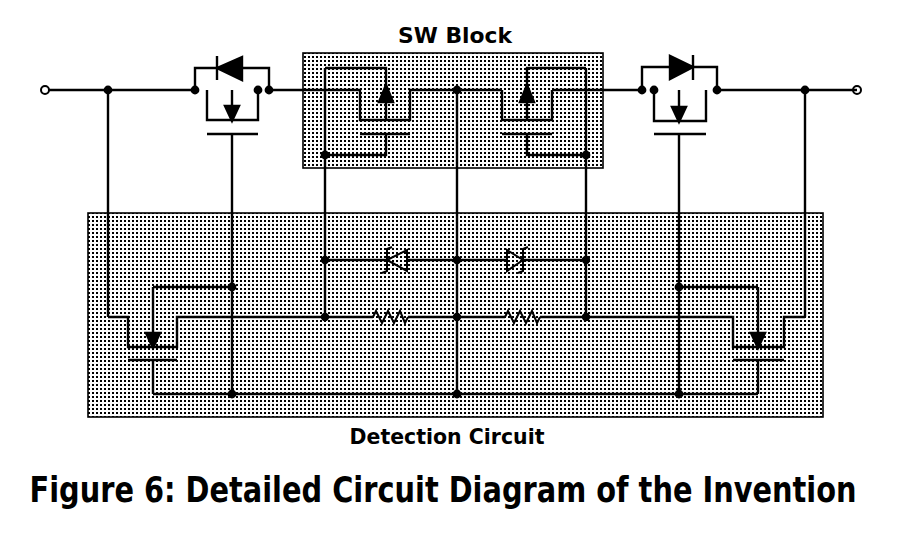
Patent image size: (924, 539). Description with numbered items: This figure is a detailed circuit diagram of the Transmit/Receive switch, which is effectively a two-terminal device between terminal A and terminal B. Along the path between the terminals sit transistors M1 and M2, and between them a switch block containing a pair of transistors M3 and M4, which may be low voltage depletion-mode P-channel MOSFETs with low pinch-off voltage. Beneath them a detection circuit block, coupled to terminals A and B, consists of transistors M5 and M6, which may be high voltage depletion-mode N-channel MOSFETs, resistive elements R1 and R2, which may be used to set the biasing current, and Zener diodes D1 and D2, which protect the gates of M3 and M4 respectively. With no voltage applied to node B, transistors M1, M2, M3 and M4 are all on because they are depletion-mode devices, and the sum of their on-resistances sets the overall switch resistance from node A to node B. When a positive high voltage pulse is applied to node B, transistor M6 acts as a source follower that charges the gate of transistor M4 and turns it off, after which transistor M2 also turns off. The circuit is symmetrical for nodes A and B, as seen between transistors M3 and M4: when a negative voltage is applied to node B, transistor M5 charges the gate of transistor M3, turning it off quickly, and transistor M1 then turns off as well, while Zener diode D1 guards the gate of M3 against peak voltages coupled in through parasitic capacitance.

The terminal A is at (34, 92).
The terminal B is at (870, 92).
The transistor M1 is at (223, 95).
The transistor M2 is at (690, 94).
The transistor M3 is at (391, 113).
The transistor M4 is at (543, 113).
The transistor M5 is at (173, 340).
The transistor M6 is at (735, 340).
The Zener diode D1 is at (391, 250).
The Zener diode D2 is at (548, 250).
The resistive element R1 is at (391, 330).
The resistive element R2 is at (547, 330).